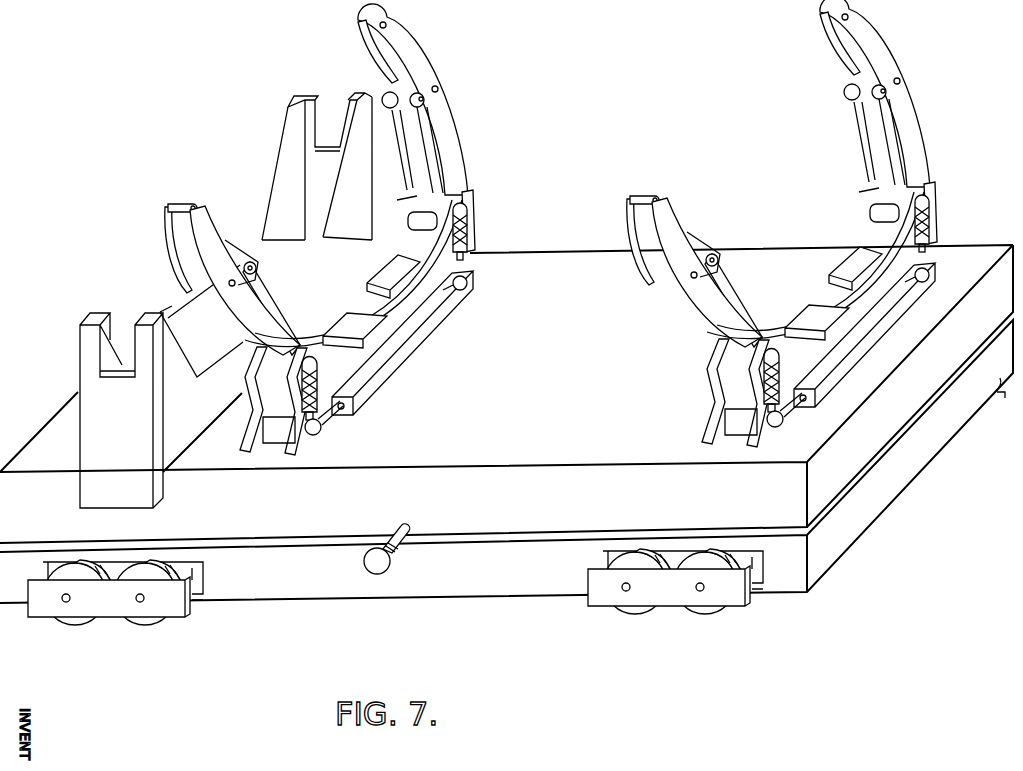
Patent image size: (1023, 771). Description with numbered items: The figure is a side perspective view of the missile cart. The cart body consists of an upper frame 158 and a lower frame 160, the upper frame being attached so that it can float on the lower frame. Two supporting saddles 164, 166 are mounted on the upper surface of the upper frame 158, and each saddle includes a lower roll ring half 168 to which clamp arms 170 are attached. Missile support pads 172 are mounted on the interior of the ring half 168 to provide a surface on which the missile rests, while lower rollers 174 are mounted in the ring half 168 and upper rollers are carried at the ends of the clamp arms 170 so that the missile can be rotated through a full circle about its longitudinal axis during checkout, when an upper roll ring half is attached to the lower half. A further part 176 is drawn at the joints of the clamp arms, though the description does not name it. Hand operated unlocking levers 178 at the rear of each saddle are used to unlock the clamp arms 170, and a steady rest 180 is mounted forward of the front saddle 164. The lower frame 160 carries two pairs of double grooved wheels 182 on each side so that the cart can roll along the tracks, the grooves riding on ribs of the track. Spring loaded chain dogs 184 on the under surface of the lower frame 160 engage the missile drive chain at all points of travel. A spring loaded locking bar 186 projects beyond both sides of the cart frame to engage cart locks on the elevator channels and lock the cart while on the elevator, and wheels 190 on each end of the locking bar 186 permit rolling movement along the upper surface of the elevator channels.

The upper frame 158 is at (560, 376).
The lower frame 160 is at (920, 462).
The front supporting saddle 164 is at (350, 368).
The rear supporting saddle 166 is at (925, 275).
The lower roll ring half 168 is at (200, 300).
The clamp arm 170 is at (403, 47).
The missile support pad 172 is at (350, 318).
The lower roller 174 is at (415, 215).
The pivot link 176 is at (357, 21).
The hand operated unlocking lever 178 is at (470, 223).
The steady rest 180 is at (95, 440).
The double grooved wheel 182 is at (672, 600).
The spring loaded chain dog 184 is at (1003, 402).
The spring loaded locking bar 186 is at (400, 530).
The wheel 190 is at (364, 560).